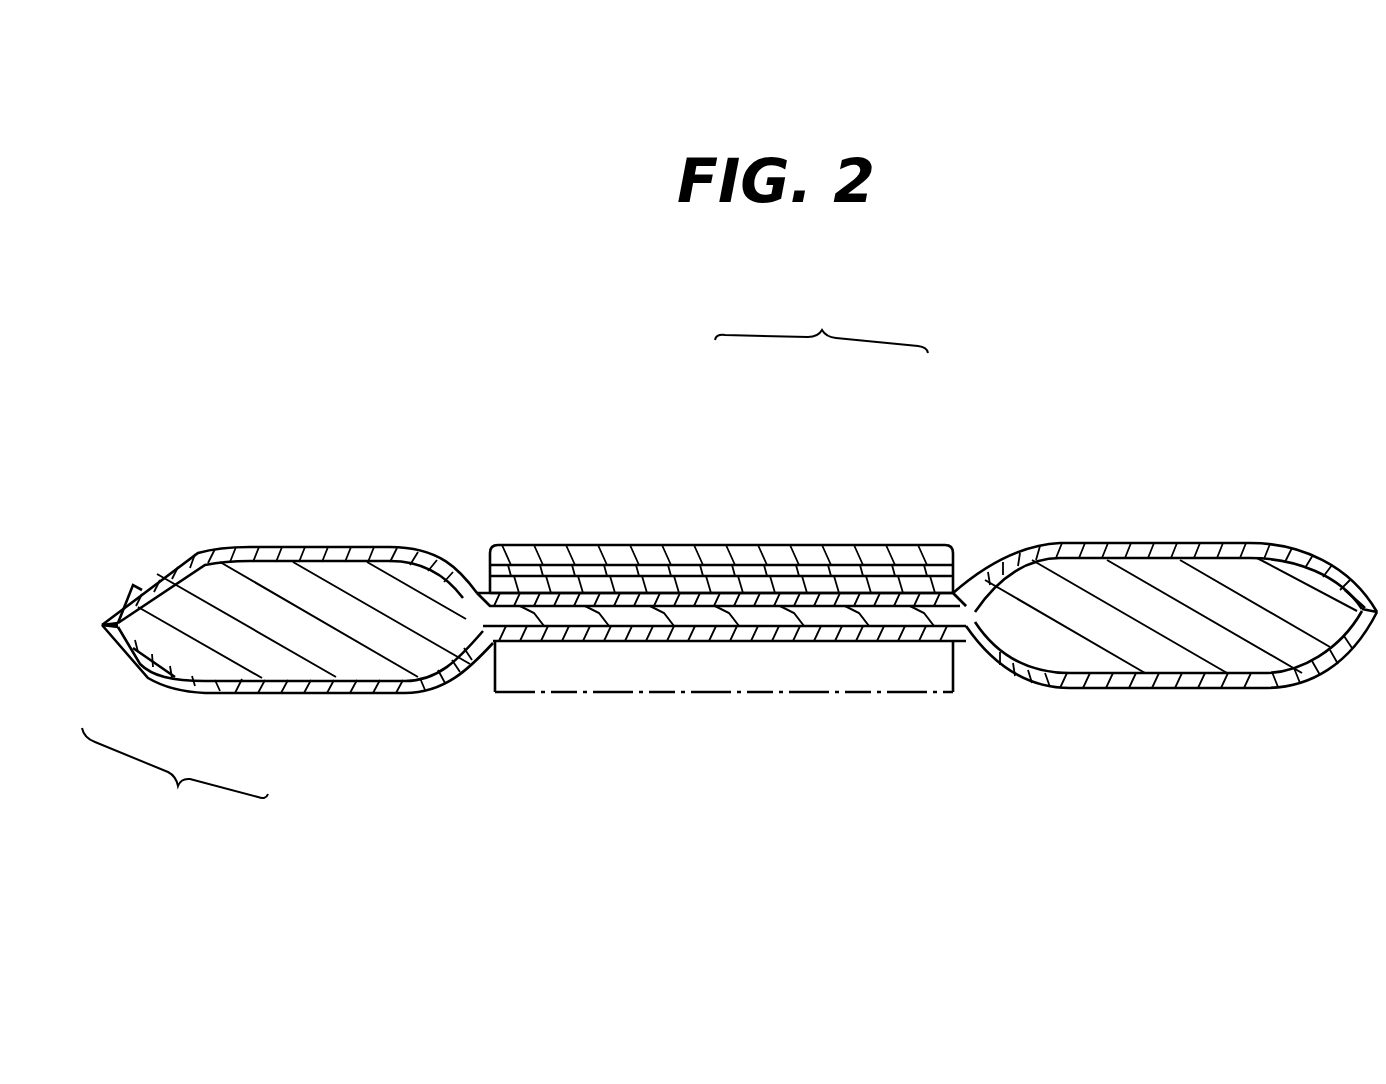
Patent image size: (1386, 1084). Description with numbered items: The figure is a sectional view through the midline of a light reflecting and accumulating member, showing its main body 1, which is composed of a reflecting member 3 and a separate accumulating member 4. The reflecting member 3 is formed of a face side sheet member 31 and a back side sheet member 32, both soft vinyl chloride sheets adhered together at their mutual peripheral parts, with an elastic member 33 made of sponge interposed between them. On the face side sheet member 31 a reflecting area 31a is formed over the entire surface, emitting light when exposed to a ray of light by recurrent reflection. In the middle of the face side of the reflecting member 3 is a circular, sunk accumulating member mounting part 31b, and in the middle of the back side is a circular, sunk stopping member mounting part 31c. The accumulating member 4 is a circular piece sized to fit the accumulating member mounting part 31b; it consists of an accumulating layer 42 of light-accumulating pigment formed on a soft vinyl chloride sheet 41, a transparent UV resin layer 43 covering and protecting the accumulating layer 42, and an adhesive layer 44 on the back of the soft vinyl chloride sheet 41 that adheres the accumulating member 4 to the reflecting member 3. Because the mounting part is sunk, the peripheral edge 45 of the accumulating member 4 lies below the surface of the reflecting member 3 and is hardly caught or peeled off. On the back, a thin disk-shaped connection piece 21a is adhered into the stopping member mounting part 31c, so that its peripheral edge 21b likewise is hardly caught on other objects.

The main body 1 is at (1240, 497).
The reflecting member 3 is at (175, 785).
The accumulating member 4 is at (821, 310).
The connection piece 21a is at (722, 665).
The peripheral edge of the connection piece 21b is at (495, 645).
The face side sheet member 31 is at (177, 553).
The reflecting area 31a is at (305, 547).
The accumulating member mounting part 31b is at (583, 602).
The stopping member mounting part 31c is at (632, 643).
The back side sheet member 32 is at (290, 693).
The elastic member 33 is at (223, 642).
The soft vinyl chloride sheet 41 is at (853, 585).
The accumulating layer 42 is at (785, 570).
The UV resin layer 43 is at (727, 545).
The adhesive layer 44 is at (667, 592).
The peripheral edge of the accumulating member 45 is at (480, 580).